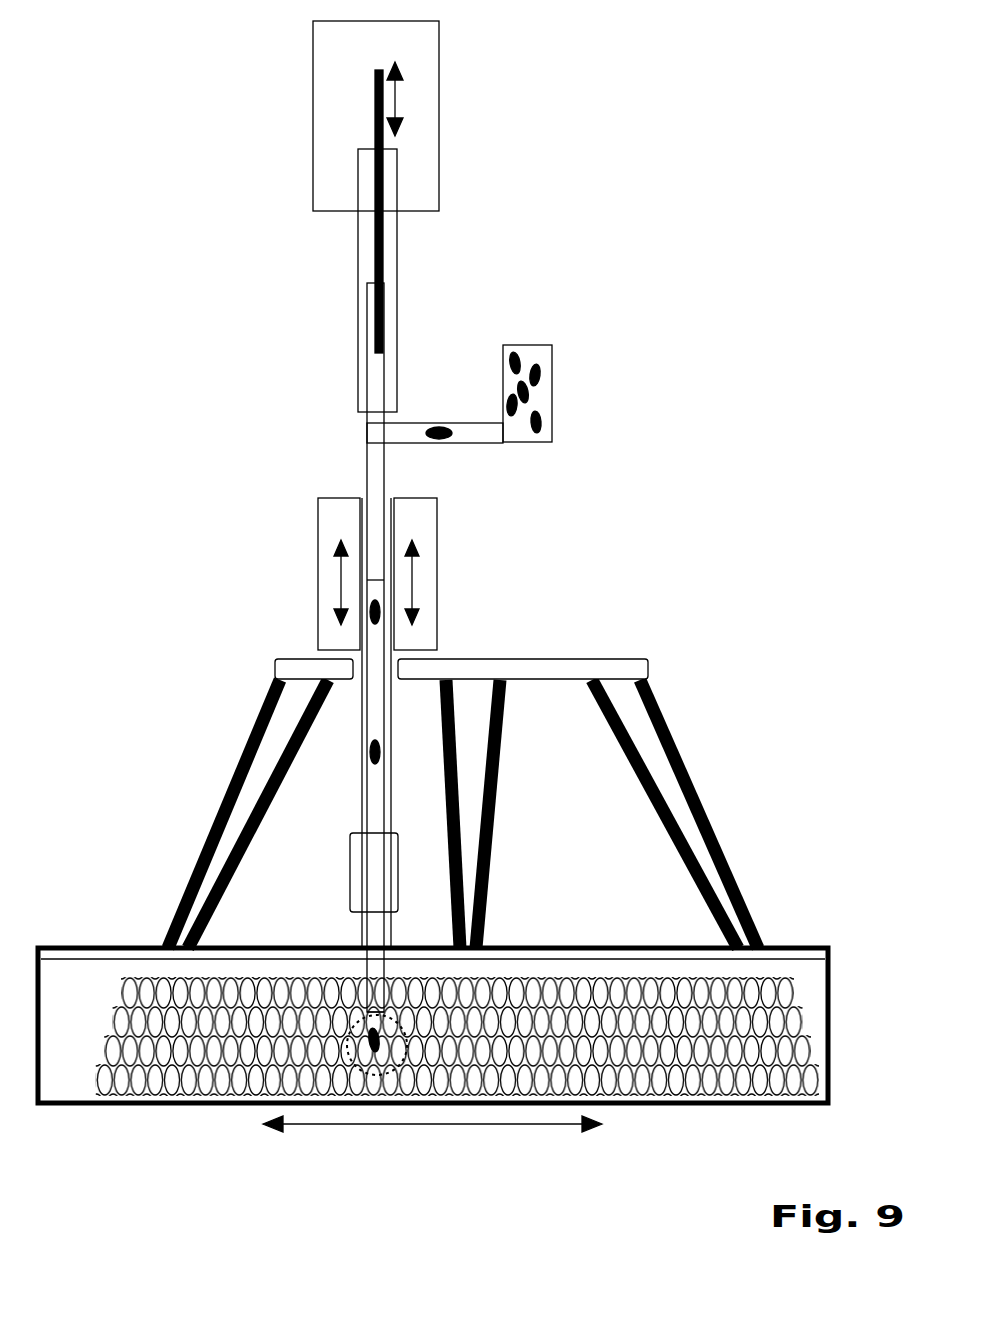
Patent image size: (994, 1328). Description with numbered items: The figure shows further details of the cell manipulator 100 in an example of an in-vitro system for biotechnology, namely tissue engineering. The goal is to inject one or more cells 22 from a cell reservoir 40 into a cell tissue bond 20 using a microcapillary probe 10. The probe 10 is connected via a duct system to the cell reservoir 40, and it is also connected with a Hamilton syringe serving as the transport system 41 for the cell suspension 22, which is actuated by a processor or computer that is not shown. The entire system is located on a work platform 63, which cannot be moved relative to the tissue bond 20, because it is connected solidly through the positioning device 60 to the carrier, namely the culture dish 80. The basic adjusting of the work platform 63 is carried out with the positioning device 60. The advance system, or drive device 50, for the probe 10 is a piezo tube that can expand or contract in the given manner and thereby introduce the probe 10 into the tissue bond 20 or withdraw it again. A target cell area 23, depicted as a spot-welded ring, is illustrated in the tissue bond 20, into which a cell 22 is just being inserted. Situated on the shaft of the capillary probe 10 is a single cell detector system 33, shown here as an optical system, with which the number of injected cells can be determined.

The cell manipulator 100 is at (780, 337).
The probe 10 is at (375, 935).
The cell tissue bond 20 is at (772, 945).
The cell 22 is at (540, 396).
The target cell area 23 is at (400, 1008).
The single cell detector system 33 is at (392, 883).
The cell reservoir 40 is at (552, 362).
The transport system 41 is at (412, 180).
The drive device 50 is at (430, 580).
The positioning device 60 is at (638, 727).
The work platform 63 is at (485, 676).
The culture dish 80 is at (781, 1030).